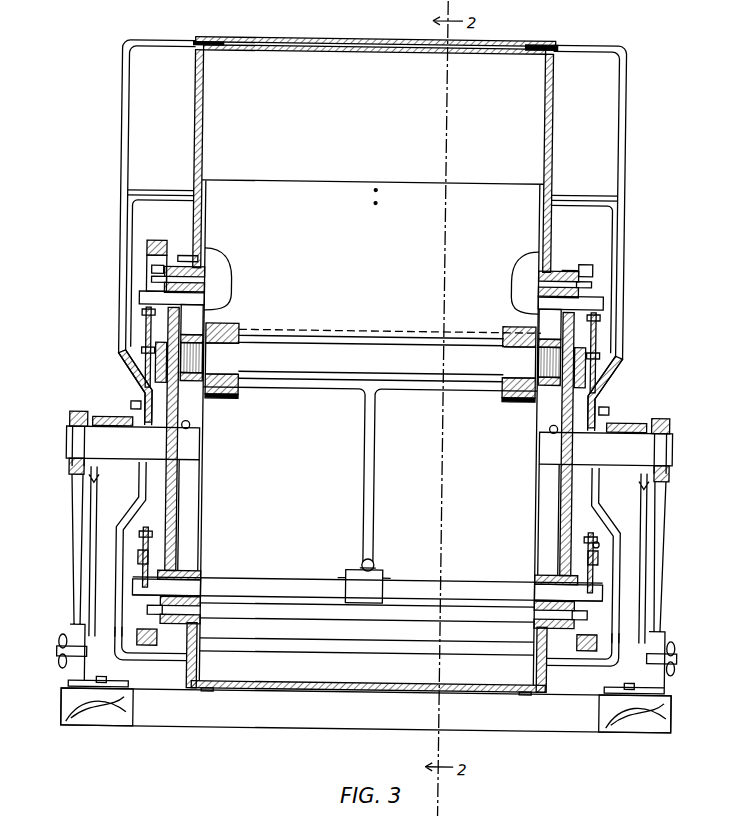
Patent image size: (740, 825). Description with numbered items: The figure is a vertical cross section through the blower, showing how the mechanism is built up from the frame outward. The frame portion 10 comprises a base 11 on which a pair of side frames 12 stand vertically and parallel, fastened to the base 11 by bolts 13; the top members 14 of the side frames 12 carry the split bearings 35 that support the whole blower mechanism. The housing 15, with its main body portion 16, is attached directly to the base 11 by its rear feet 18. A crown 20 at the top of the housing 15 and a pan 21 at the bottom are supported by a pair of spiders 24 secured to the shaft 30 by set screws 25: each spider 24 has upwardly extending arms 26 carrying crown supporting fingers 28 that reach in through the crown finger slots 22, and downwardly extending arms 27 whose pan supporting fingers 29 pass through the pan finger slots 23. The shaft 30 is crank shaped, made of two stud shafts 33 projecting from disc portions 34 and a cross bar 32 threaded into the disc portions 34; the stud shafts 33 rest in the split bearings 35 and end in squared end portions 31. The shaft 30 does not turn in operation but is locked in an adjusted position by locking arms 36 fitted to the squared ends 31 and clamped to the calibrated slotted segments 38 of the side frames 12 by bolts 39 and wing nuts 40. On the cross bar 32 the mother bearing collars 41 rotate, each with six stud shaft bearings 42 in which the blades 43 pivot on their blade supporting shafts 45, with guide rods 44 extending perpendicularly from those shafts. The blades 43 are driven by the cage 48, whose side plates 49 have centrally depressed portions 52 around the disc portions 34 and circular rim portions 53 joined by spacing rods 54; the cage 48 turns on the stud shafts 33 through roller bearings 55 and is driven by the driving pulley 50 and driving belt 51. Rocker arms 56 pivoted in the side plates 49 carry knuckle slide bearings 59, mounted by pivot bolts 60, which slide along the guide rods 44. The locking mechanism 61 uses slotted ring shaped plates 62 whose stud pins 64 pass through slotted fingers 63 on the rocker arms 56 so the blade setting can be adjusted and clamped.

The frame portion 10 is at (65, 690).
The base 11 is at (80, 724).
The side frames 12 is at (120, 676).
The bolts 13 is at (105, 680).
The top members 14 is at (113, 482).
The housing 15 is at (185, 258).
The main body portion 16 is at (192, 142).
The rear feet 18 is at (215, 695).
The crown 20 is at (318, 41).
The pan 21 is at (436, 690).
The crown finger slots 22 is at (191, 50).
The pan finger slots 23 is at (582, 645).
The spiders 24 is at (147, 392).
The set screw 25 is at (131, 408).
The upwardly extending arms 26 is at (118, 285).
The downwardly extending arms 27 is at (119, 610).
The crown supporting fingers 28 is at (140, 187).
The pan supporting fingers 29 is at (188, 672).
The shaft 30 is at (72, 470).
The squared end portions 31 is at (67, 446).
The cross bar 32 is at (470, 368).
The stud shafts 33 is at (172, 450).
The disc portions 34 is at (192, 524).
The split bearings 35 is at (95, 421).
The locking arms 36 is at (76, 582).
The calibrated slotted segments 38 is at (80, 672).
The bolts 39 is at (60, 655).
The wing nuts 40 is at (64, 642).
The mother bearing collars 41 is at (227, 400).
The stud shaft bearings 42 is at (242, 327).
The blades 43 is at (430, 186).
The guide rods 44 is at (376, 492).
The blade supporting shafts 45 is at (320, 332).
The cage 48 is at (578, 264).
The side plates 49 is at (167, 325).
The driving pulley 50 is at (146, 250).
The driving belt 51 is at (155, 243).
The centrally depressed portions 52 is at (215, 316).
The circular rim portions 53 is at (205, 270).
The spacing rods 54 is at (215, 280).
The roller bearings 55 is at (190, 427).
The rocker arms 56 is at (205, 300).
The knuckle slide bearings 59 is at (377, 562).
The pivot bolts 60 is at (345, 578).
The locking mechanism 61 is at (155, 373).
The slotted ring shaped plates 62 is at (145, 560).
The slotted fingers 63 is at (145, 321).
The stud pins 64 is at (600, 542).